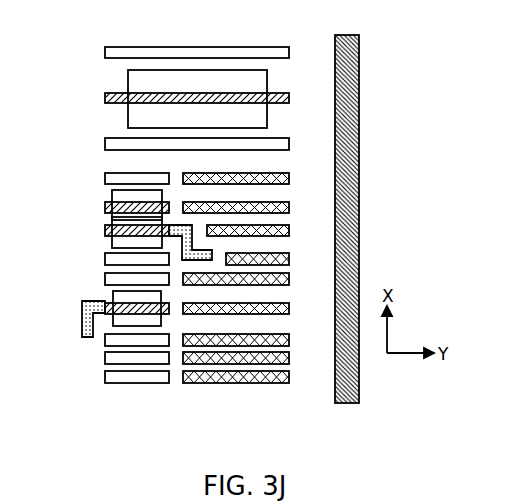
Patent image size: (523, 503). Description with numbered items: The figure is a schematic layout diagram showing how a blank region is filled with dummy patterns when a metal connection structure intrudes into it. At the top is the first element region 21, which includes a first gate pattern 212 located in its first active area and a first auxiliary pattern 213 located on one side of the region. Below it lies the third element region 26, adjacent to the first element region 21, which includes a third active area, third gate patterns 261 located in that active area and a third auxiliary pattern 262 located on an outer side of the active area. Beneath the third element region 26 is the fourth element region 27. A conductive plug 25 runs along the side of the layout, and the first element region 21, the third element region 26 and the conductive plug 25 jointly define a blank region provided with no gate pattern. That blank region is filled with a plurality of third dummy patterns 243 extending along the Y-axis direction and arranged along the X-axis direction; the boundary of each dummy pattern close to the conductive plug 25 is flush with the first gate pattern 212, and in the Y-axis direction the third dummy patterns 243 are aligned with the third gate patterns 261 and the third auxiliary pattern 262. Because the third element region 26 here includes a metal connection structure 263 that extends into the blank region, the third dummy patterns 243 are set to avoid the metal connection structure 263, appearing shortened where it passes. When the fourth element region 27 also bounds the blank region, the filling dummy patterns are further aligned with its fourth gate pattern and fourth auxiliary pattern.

The first element region 21 is at (96, 48).
The first auxiliary pattern 213 is at (290, 52).
The first gate pattern 212 is at (273, 92).
The third element region 26 is at (96, 173).
The third auxiliary pattern 262 is at (134, 172).
The third gate pattern 261 is at (105, 210).
The third dummy pattern 243 is at (290, 204).
The metal connection structure 263 is at (212, 250).
The fourth element region 27 is at (77, 275).
The conductive plug 25 is at (335, 373).